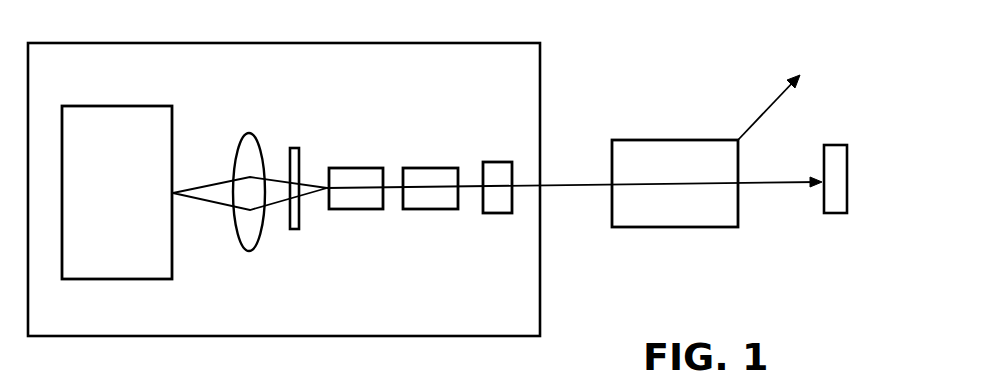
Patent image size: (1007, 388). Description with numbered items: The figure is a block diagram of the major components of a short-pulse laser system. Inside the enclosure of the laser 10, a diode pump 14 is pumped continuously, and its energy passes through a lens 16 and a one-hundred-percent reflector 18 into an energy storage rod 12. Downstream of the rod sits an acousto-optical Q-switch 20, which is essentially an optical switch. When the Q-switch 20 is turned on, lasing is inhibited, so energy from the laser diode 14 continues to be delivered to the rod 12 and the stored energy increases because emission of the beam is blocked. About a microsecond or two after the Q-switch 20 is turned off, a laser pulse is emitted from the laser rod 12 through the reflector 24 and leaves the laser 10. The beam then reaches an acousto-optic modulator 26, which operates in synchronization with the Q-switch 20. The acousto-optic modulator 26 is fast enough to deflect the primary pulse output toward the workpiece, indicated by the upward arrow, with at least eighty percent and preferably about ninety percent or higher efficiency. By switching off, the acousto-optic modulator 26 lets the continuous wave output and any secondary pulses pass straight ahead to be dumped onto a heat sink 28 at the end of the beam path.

The laser 10 is at (318, 42).
The energy storage rod 12 is at (364, 168).
The diode pump 14 is at (149, 106).
The lens 16 is at (248, 133).
The 100-percent reflector 18 is at (297, 148).
The acousto-optical Q-switch 20 is at (437, 168).
The reflector 24 is at (500, 162).
The acousto-optic modulator 26 is at (722, 227).
The heat sink 28 is at (835, 213).